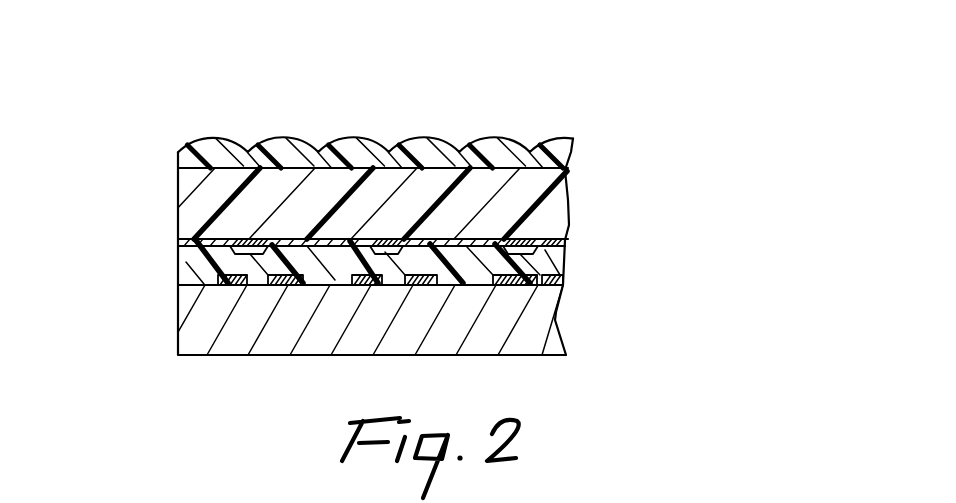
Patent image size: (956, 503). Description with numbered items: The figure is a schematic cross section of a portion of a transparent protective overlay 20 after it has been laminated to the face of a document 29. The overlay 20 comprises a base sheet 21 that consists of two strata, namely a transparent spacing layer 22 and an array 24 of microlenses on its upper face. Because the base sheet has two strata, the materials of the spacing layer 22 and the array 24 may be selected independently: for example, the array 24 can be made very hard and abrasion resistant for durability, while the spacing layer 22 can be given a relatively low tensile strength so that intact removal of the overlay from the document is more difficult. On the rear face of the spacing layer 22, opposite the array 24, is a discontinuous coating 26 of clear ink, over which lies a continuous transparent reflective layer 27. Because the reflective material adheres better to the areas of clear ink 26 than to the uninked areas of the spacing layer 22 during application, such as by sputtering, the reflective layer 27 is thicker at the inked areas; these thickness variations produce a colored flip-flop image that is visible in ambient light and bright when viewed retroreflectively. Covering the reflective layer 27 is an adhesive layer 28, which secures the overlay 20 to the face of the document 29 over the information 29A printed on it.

The overlay 20 is at (516, 101).
The base sheet 21 is at (145, 138).
The transparent spacing layer 22 is at (545, 182).
The array of microlenses 24 is at (225, 150).
The discontinuous coating of clear ink 26 is at (385, 239).
The transparent reflective layer 27 is at (487, 236).
The adhesive layer 28 is at (195, 272).
The document 29 is at (192, 338).
The information 29A is at (555, 274).